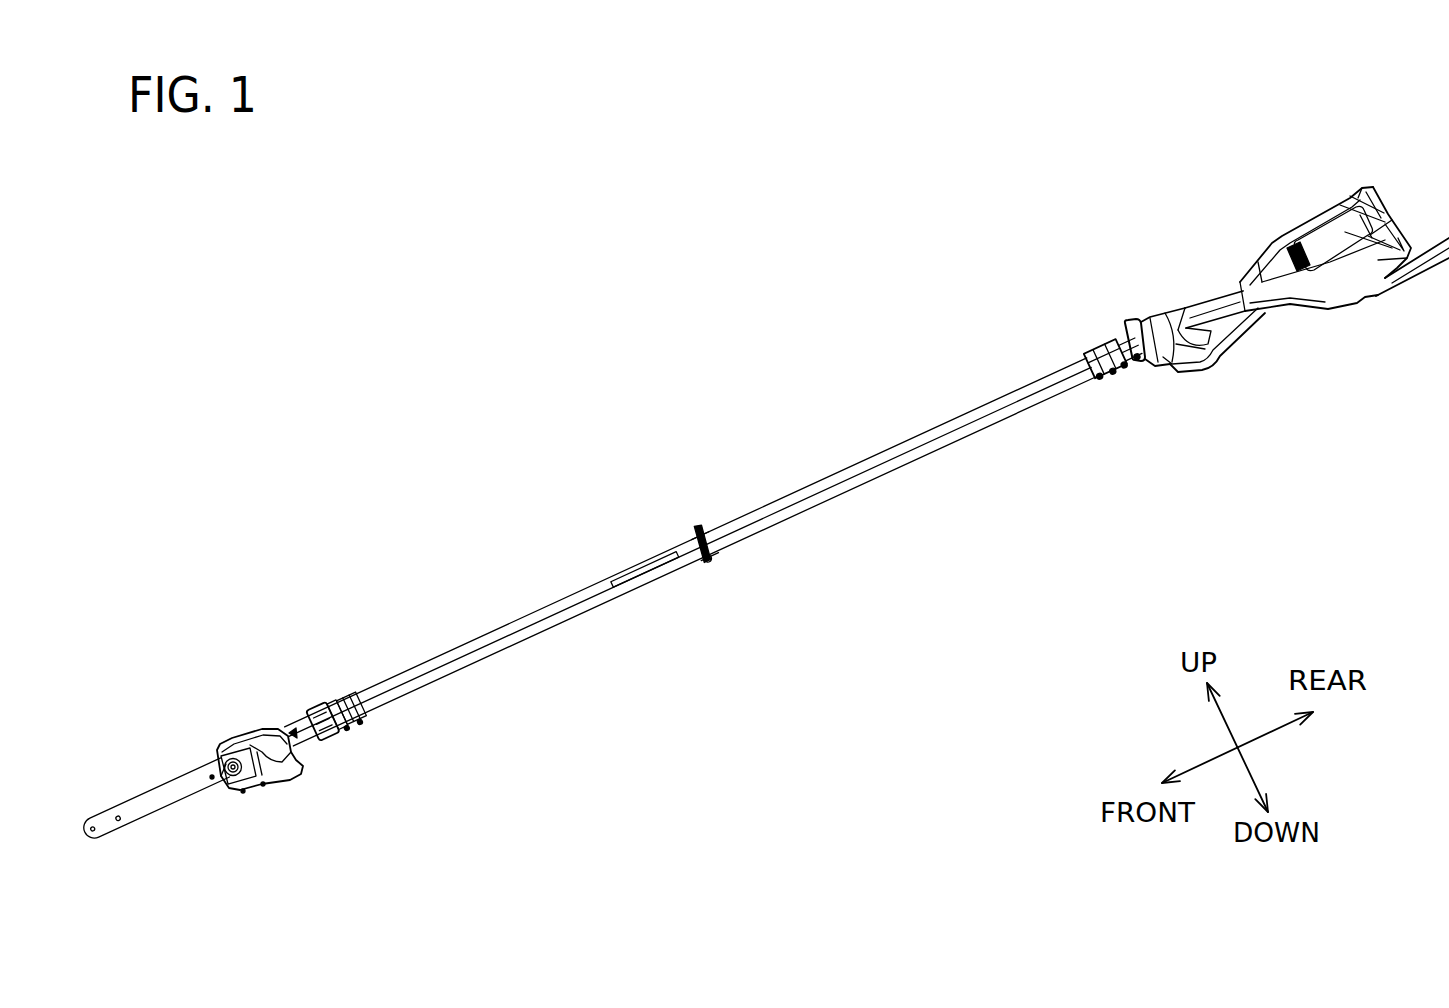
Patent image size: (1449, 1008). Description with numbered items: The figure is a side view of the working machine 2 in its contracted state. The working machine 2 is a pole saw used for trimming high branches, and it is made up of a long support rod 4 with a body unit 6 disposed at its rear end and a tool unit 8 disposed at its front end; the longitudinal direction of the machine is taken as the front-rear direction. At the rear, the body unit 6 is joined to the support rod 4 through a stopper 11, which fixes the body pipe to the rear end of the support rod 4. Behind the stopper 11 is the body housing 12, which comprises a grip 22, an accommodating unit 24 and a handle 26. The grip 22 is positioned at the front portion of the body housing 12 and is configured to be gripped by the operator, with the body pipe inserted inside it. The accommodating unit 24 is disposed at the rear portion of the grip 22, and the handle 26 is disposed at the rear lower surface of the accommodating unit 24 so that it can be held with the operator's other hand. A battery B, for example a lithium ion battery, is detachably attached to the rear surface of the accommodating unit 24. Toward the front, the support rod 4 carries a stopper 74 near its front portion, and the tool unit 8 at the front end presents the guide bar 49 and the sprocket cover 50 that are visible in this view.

The working machine 2 is at (437, 375).
The support rod 4 is at (706, 468).
The body unit 6 is at (1225, 253).
The tool unit 8 is at (197, 713).
The stopper 11 is at (1097, 353).
The body housing 12 is at (1148, 318).
The grip 22 is at (1203, 303).
The accommodating unit 24 is at (1300, 232).
The handle 26 is at (1436, 262).
The guide bar 49 is at (115, 813).
The sprocket cover 50 is at (250, 785).
The stopper 74 is at (323, 707).
The battery B is at (1377, 194).